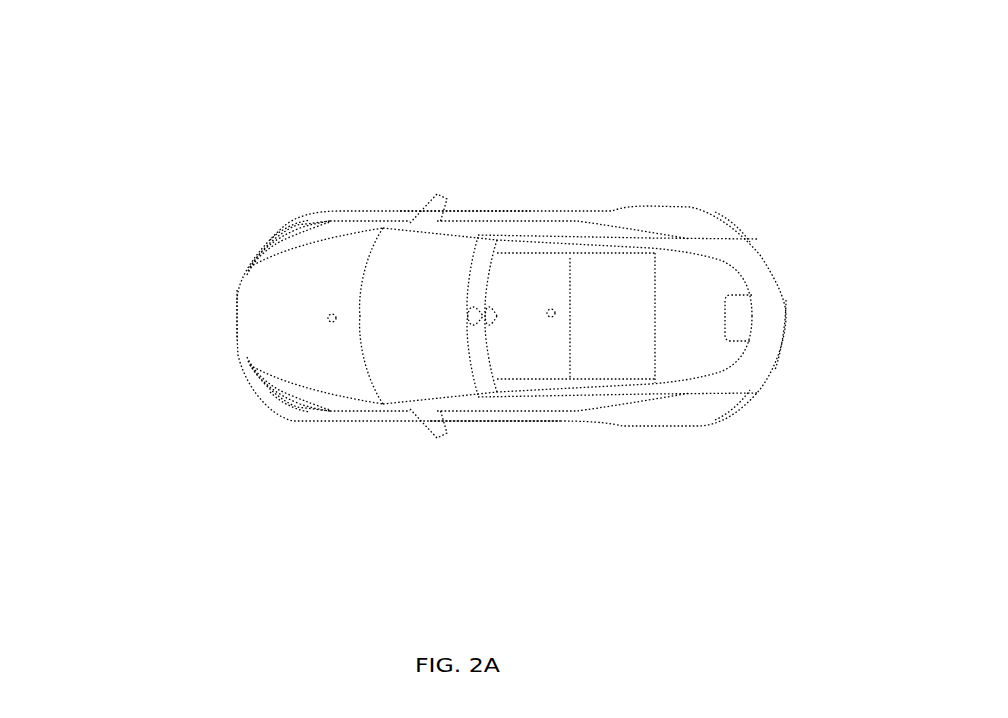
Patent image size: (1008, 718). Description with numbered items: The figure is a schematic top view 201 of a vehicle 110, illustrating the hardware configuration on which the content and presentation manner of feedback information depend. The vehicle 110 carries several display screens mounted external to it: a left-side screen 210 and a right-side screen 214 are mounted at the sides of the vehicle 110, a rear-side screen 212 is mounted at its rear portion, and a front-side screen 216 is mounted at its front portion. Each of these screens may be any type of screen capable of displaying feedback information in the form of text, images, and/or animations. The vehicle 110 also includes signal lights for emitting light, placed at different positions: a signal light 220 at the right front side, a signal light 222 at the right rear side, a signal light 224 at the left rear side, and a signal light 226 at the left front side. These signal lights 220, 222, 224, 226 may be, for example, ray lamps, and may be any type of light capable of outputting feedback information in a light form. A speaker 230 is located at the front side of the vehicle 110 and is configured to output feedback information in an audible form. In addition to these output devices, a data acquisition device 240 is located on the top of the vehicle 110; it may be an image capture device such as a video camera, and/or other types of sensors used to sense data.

The top view 201 is at (204, 82).
The vehicle 110 is at (768, 267).
The left-side screen 210 is at (464, 227).
The rear-side screen 212 is at (760, 312).
The right-side screen 214 is at (493, 403).
The front-side screen 216 is at (264, 312).
The signal light 220 is at (285, 222).
The signal light 222 is at (732, 230).
The signal light 224 is at (731, 400).
The signal light 226 is at (294, 403).
The speaker 230 is at (331, 307).
The data acquisition device 240 is at (530, 308).